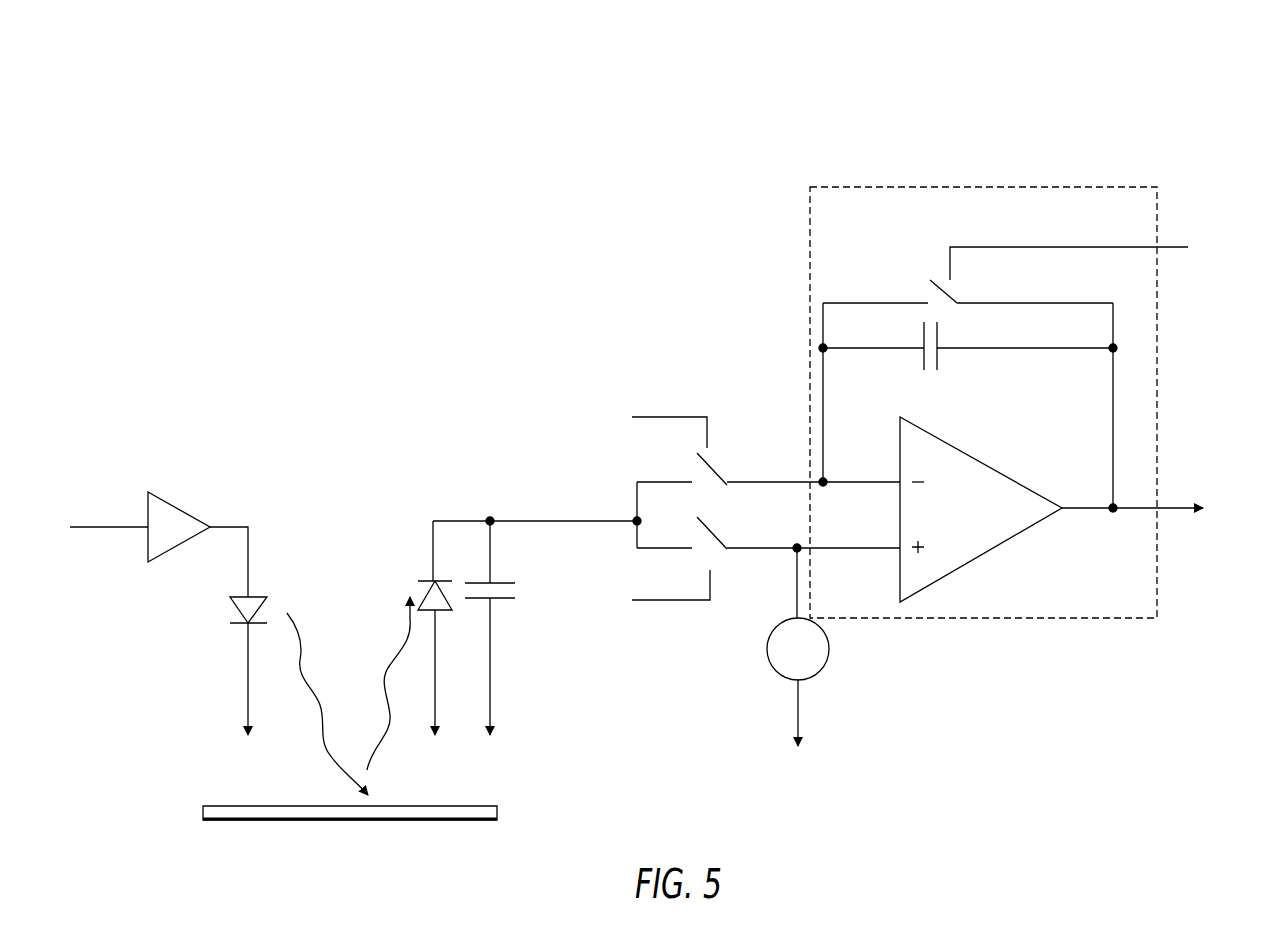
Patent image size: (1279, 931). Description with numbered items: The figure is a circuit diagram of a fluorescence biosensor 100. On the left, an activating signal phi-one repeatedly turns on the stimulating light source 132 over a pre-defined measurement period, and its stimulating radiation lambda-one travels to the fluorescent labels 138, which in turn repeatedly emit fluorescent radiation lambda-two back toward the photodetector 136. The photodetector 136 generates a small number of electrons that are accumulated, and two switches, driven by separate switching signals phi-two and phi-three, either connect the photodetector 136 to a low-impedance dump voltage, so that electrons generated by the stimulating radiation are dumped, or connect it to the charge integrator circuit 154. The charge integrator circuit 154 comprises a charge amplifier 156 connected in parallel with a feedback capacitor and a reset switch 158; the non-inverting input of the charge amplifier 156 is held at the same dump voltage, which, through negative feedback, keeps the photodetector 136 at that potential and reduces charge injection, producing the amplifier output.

The fluorescence biosensor 100 is at (1075, 106).
The stimulating light source 132 is at (170, 502).
The photodetector 136 is at (430, 580).
The fluorescent labels 138 is at (497, 810).
The charge integrator circuit 154 is at (1057, 187).
The charge amplifier 156 is at (998, 472).
The reset switch 158 is at (917, 303).